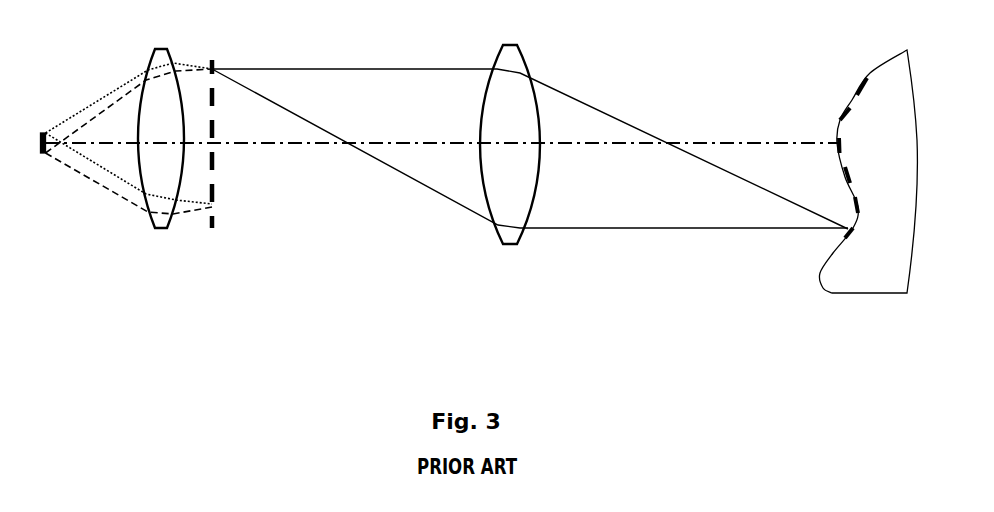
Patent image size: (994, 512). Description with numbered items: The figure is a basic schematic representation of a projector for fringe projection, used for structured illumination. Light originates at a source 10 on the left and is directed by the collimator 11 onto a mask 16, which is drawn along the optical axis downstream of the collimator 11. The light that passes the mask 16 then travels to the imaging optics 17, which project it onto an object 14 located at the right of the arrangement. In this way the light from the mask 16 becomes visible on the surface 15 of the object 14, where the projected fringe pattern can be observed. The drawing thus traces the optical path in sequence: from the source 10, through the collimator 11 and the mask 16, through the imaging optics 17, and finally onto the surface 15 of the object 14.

The source 10 is at (39, 128).
The collimator 11 is at (161, 123).
The mask 16 is at (215, 123).
The imaging optics 17 is at (510, 131).
The object 14 is at (868, 156).
The surface 15 is at (842, 118).